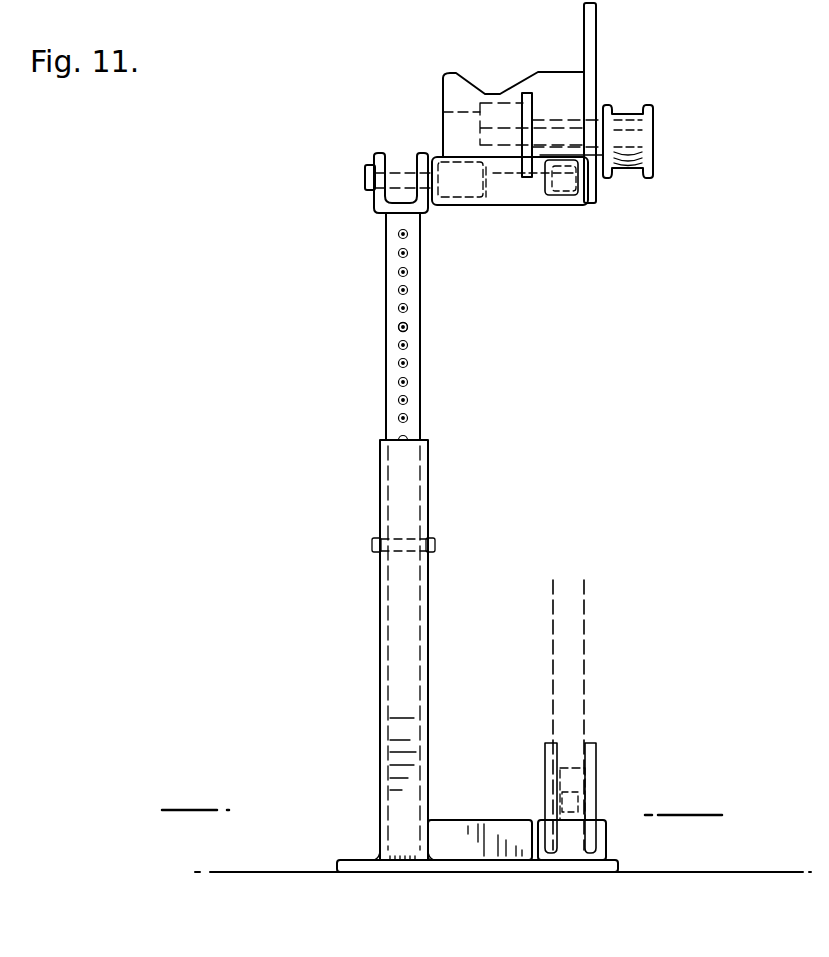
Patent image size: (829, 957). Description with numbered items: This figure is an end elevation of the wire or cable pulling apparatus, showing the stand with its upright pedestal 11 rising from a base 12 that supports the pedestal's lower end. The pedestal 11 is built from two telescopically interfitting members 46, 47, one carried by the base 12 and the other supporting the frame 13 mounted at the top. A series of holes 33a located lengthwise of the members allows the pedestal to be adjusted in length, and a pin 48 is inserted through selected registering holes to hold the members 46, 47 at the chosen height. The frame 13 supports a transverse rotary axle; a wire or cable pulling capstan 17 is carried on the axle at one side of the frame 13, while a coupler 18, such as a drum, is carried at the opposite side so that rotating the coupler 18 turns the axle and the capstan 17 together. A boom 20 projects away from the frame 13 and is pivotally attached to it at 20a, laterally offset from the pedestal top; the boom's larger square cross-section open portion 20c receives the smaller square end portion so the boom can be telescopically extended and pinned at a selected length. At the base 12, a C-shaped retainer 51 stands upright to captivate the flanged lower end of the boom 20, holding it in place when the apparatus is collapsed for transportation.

The upright pedestal 11 is at (340, 450).
The base 12 is at (182, 808).
The frame 13 is at (436, 93).
The wire or cable pulling capstan 17 is at (653, 157).
The coupler 18 is at (443, 111).
The boom 20 is at (596, 646).
The pivotal attachment 20a is at (365, 178).
The open boom section 20c is at (558, 197).
The holes 33a is at (400, 328).
The telescopically interfitting member 46 is at (362, 615).
The telescopically interfitting member 47 is at (430, 372).
The pin 48 is at (436, 545).
The C-shaped retainer 51 is at (607, 838).